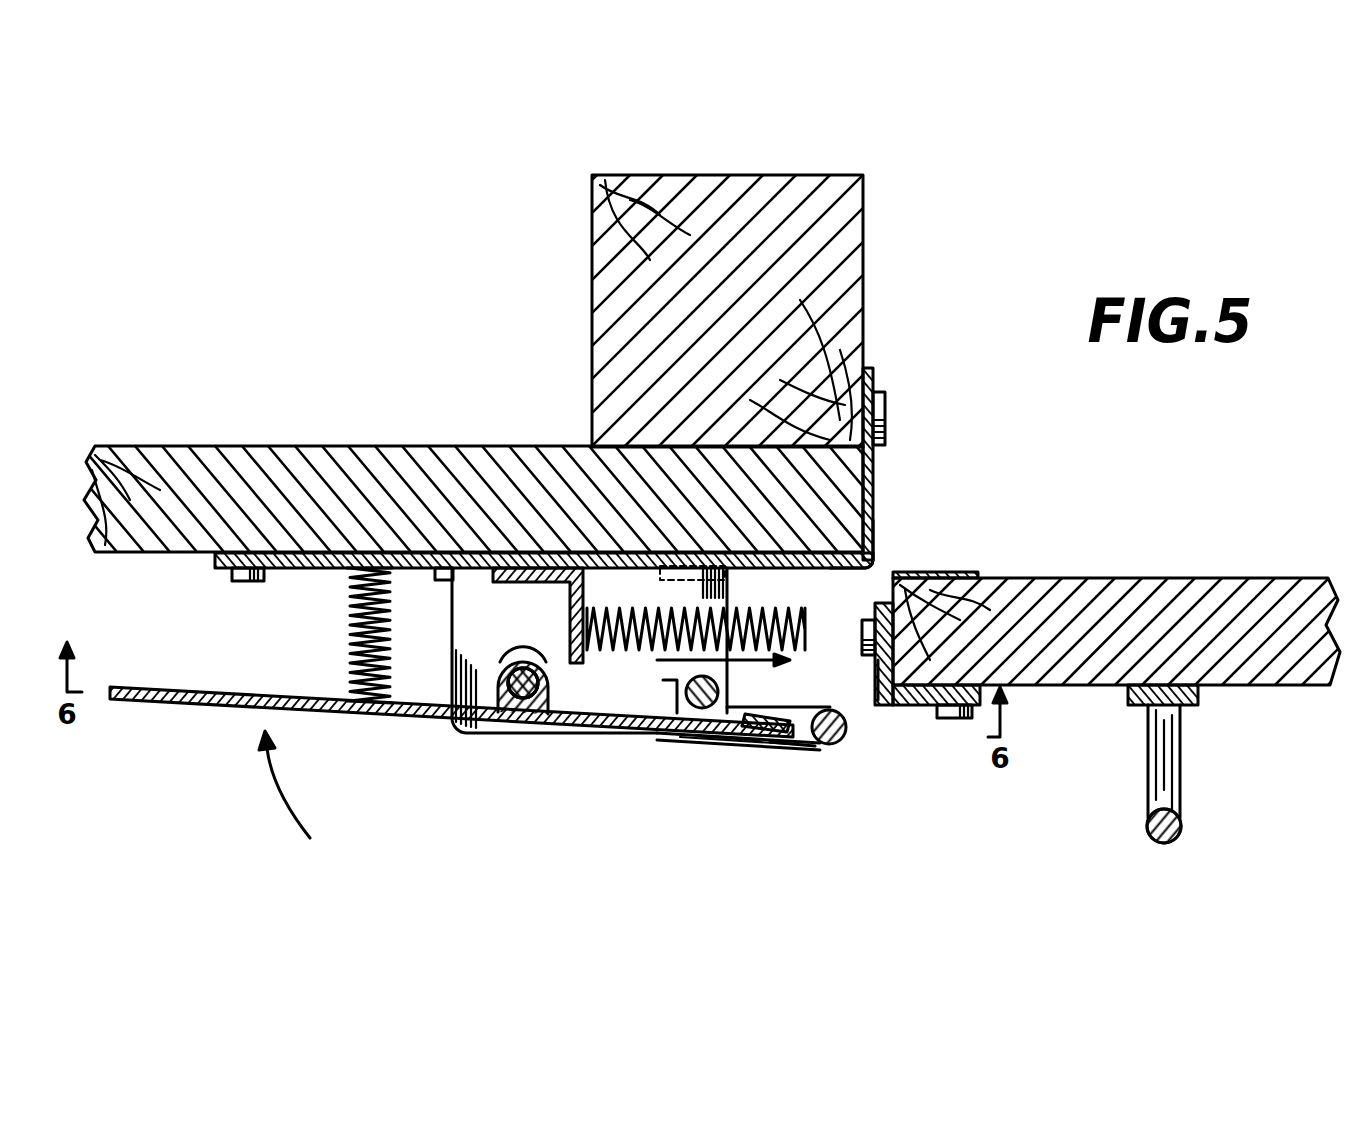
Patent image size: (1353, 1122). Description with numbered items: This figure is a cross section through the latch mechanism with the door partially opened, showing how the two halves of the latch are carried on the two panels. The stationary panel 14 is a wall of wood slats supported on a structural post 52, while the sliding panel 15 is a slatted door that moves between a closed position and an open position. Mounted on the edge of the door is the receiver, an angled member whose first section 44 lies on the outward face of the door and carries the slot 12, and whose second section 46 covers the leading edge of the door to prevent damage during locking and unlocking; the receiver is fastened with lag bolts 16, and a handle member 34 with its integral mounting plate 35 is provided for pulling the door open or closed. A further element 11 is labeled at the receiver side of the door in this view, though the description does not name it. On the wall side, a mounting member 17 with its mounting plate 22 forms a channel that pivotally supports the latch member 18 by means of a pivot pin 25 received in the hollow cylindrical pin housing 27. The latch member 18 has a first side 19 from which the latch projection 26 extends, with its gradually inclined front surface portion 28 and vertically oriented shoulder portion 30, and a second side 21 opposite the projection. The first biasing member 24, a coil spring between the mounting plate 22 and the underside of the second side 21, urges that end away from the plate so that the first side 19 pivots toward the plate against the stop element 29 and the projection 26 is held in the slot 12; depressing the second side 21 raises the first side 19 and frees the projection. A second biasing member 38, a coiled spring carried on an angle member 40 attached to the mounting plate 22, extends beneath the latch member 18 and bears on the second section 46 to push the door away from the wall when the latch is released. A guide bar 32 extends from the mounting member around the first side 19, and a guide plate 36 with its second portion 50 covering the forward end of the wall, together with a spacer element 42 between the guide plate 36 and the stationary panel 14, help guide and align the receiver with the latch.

The mounting bracket 11 is at (880, 720).
The slot 12 is at (922, 707).
The stationary panel 14 is at (290, 445).
The sliding panel 15 is at (1180, 578).
The lag bolt 16 is at (880, 412).
The mounting member 17 is at (470, 745).
The latch member 18 is at (415, 735).
The first side 19 is at (702, 750).
The second side 21 is at (112, 700).
The mounting plate 22 is at (216, 563).
The first biasing member 24 is at (347, 640).
The pivot pin 25 is at (530, 712).
The latch projection 26 is at (790, 750).
The pin housing 27 is at (518, 662).
The inclined front surface portion 28 is at (792, 715).
The stop element 29 is at (667, 742).
The shoulder portion 30 is at (745, 745).
The guide bar 32 is at (829, 746).
The handle member 34 is at (1182, 780).
The mounting plate 35 is at (1200, 700).
The guide plate 36 is at (877, 508).
The second biasing member 38 is at (624, 652).
The angle member 40 is at (570, 600).
The spacer element 42 is at (760, 548).
The first section 44 is at (1000, 685).
The second section 46 is at (876, 680).
The second portion 50 is at (877, 472).
The structural post 52 is at (797, 175).